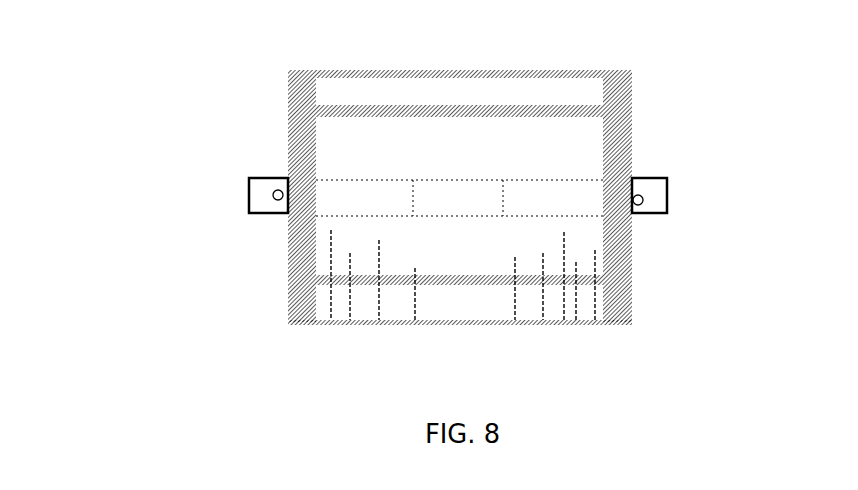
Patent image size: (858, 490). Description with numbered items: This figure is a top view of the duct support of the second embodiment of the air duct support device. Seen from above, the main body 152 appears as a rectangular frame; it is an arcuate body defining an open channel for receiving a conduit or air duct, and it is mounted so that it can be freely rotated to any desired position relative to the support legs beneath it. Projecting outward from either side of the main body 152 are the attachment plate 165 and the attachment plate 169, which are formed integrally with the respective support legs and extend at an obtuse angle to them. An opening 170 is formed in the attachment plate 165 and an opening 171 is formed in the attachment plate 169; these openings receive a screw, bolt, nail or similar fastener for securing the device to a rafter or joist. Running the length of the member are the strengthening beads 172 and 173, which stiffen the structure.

The main body 152 is at (632, 157).
The attachment plate 165 is at (251, 179).
The attachment plate 169 is at (658, 193).
The opening 170 is at (274, 198).
The opening 171 is at (643, 202).
The strengthening bead 172 is at (630, 112).
The strengthening bead 173 is at (630, 282).